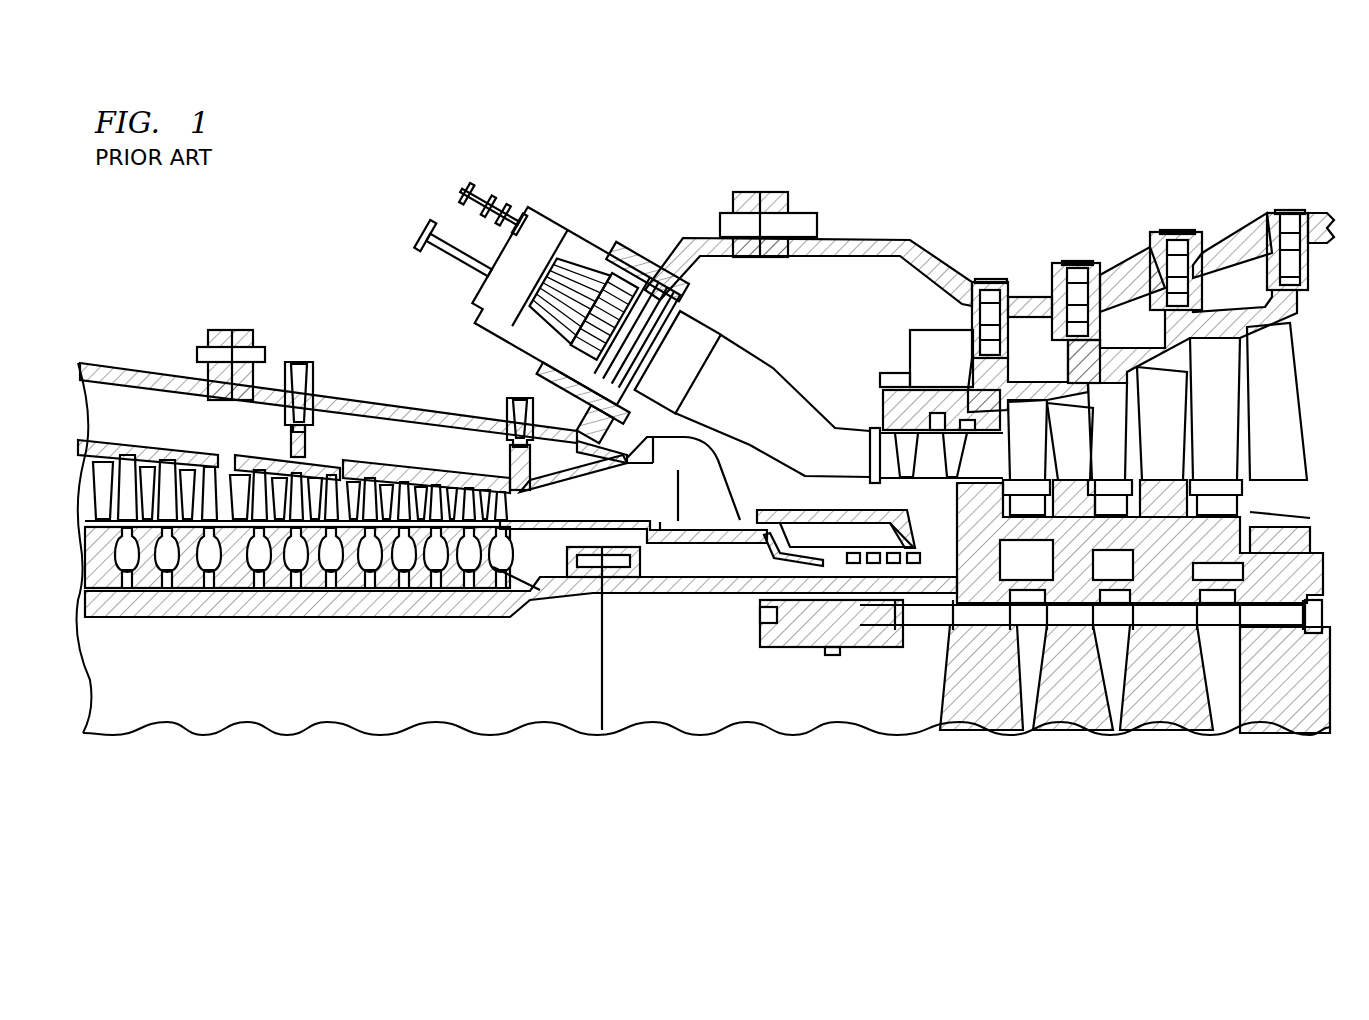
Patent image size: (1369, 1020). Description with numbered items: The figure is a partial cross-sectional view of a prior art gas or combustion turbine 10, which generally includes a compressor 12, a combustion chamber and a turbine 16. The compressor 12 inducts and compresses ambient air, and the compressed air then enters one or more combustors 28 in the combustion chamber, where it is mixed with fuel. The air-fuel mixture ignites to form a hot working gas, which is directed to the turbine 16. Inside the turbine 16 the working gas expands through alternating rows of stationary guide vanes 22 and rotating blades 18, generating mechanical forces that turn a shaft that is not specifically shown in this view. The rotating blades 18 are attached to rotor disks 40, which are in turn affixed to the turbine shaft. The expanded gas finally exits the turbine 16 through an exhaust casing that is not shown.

The gas or combustion turbine 10 is at (1037, 168).
The compressor 12 is at (229, 298).
The turbine 16 is at (1220, 220).
The rotating blades 18 is at (1085, 473).
The stationary guide vanes 22 is at (1039, 446).
The combustor 28 is at (568, 185).
The rotor disks 40 is at (1073, 710).